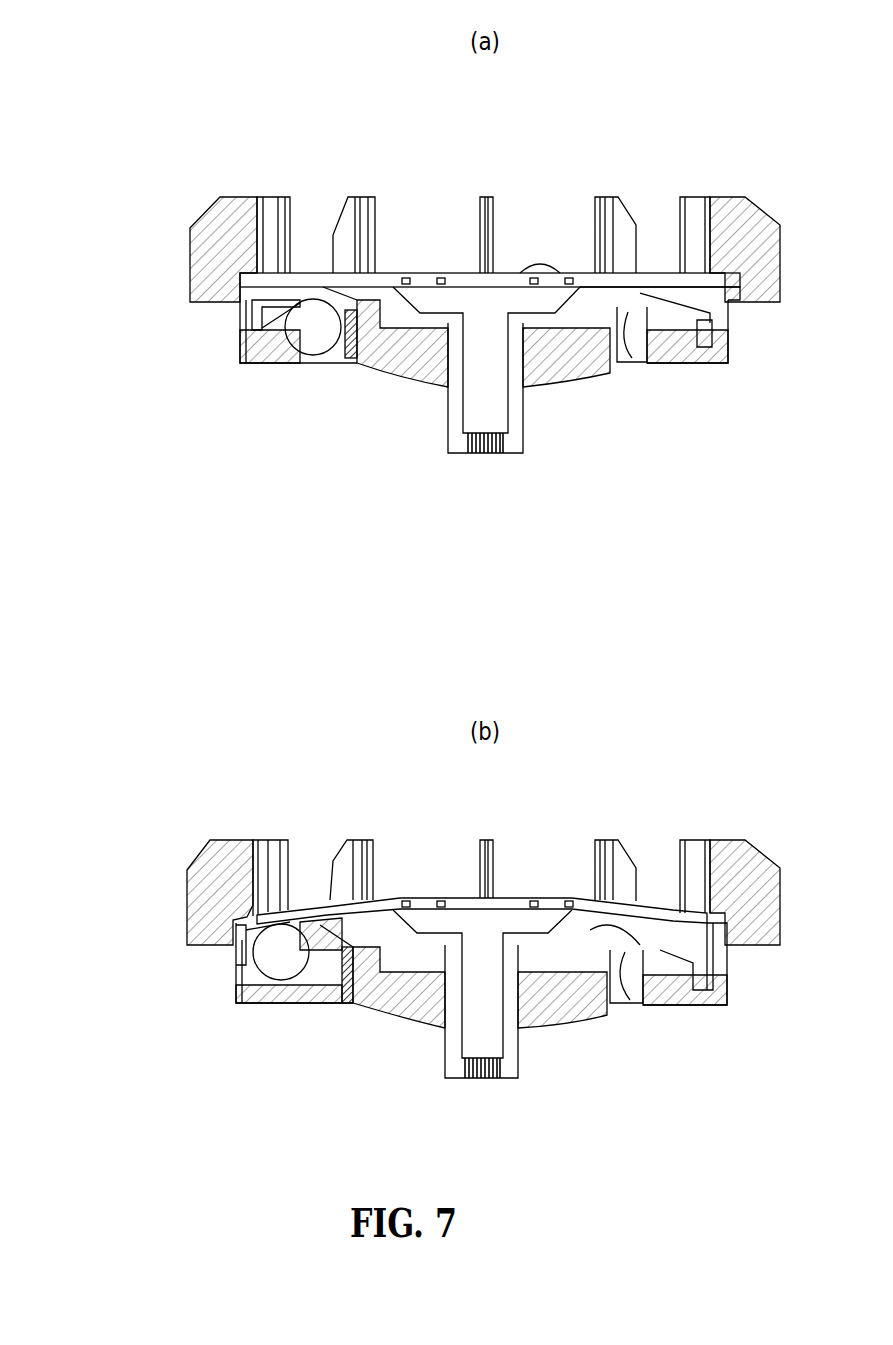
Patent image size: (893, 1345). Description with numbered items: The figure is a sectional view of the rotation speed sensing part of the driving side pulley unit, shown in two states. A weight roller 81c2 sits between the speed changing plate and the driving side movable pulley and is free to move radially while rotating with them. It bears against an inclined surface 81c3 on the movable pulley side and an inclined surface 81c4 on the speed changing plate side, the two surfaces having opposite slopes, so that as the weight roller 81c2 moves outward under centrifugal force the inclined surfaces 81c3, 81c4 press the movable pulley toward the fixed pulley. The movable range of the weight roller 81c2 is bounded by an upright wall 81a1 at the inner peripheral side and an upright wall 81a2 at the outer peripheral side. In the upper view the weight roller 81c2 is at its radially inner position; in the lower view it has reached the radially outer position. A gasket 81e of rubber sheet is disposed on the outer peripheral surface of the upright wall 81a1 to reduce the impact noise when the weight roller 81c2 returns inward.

The upright wall at the outer peripheral side 81a2 is at (243, 273).
The upright wall at the inner peripheral side 81a1 is at (373, 300).
The weight roller 81c2 is at (300, 357).
The inclined surface 81c3 is at (280, 310).
The inclined surface 81c4 is at (277, 303).
The gasket 81e is at (355, 362).